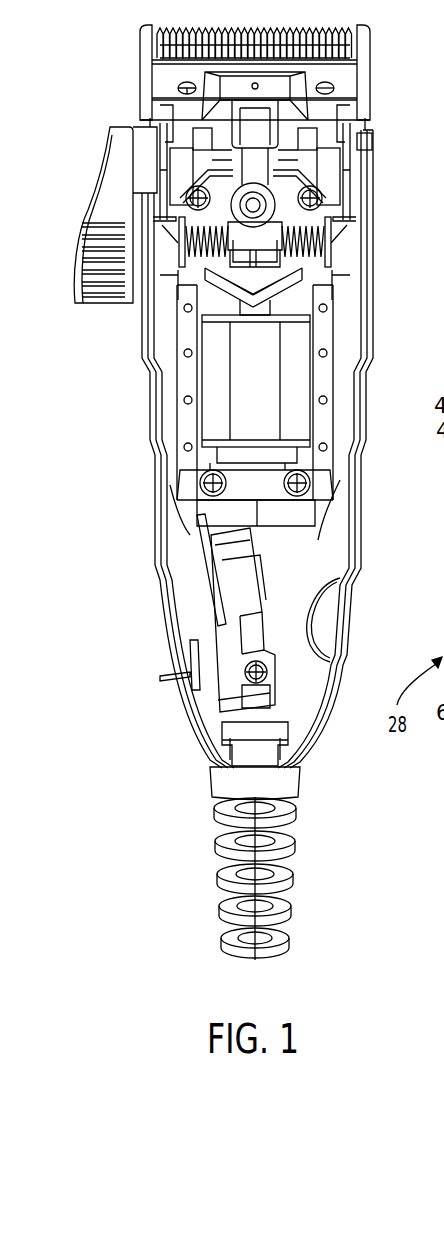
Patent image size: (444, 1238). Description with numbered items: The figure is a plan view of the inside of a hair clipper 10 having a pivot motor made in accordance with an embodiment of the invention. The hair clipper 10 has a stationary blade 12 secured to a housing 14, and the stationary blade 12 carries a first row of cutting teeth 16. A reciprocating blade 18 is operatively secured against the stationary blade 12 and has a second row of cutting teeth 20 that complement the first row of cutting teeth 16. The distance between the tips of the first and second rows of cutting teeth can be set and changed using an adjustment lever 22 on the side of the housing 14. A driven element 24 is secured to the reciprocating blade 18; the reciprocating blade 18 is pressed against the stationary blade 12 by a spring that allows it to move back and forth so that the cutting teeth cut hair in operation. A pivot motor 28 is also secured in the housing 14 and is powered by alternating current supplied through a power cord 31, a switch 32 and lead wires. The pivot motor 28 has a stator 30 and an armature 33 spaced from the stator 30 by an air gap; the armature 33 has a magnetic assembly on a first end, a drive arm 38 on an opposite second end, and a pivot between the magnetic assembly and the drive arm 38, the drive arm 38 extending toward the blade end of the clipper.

The hair clipper 10 is at (92, 378).
The stationary blade 12 is at (148, 84).
The housing 14 is at (365, 330).
The first row of cutting teeth 16 is at (150, 33).
The reciprocating blade 18 is at (340, 73).
The second row of cutting teeth 20 is at (300, 44).
The adjustment lever 22 is at (95, 212).
The driven element 24 is at (318, 113).
The pivot motor 28 is at (327, 447).
The stator 30 is at (188, 411).
The power cord 31 is at (215, 778).
The switch 32 is at (232, 600).
The armature 33 is at (278, 228).
The drive arm 38 is at (300, 130).